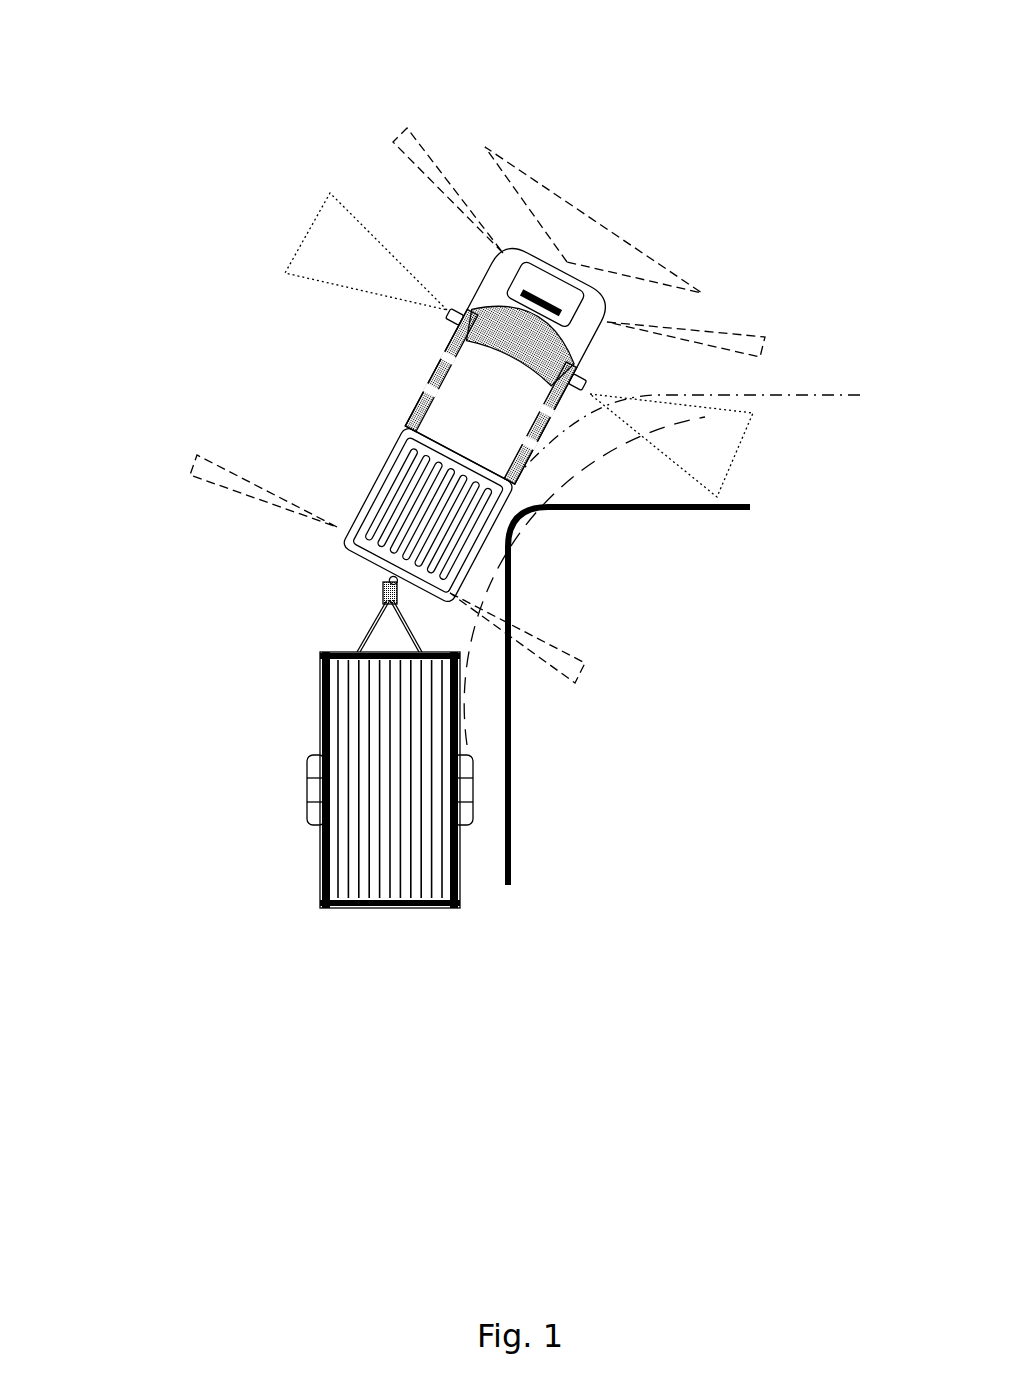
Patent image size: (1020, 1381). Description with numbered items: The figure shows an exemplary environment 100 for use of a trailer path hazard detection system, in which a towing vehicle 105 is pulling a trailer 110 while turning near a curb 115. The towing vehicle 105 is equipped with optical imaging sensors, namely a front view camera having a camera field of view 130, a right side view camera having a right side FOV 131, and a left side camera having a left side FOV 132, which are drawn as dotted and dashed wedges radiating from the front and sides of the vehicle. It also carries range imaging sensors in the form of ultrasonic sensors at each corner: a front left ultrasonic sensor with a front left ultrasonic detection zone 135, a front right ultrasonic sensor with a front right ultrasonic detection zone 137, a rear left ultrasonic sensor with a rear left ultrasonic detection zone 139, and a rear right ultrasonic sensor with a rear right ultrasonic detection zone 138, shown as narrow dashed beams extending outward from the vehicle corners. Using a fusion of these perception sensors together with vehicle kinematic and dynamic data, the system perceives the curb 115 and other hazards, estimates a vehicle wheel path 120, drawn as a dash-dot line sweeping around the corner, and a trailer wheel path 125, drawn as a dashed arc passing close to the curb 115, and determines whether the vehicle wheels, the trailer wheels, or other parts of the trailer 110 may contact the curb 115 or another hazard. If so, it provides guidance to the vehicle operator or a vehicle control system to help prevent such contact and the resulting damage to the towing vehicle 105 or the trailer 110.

The environment 100 is at (561, 32).
The towing vehicle 105 is at (377, 393).
The trailer 110 is at (302, 796).
The curb 115 is at (516, 722).
The vehicle wheel path 120 is at (852, 388).
The trailer wheel path 125 is at (480, 678).
The camera field of view 130 is at (650, 254).
The right side FOV 131 is at (745, 460).
The left side FOV 132 is at (307, 231).
The front left ultrasonic detection zone 135 is at (432, 131).
The front right ultrasonic detection zone 137 is at (729, 317).
The rear right ultrasonic detection zone 138 is at (578, 646).
The rear left ultrasonic detection zone 139 is at (180, 453).